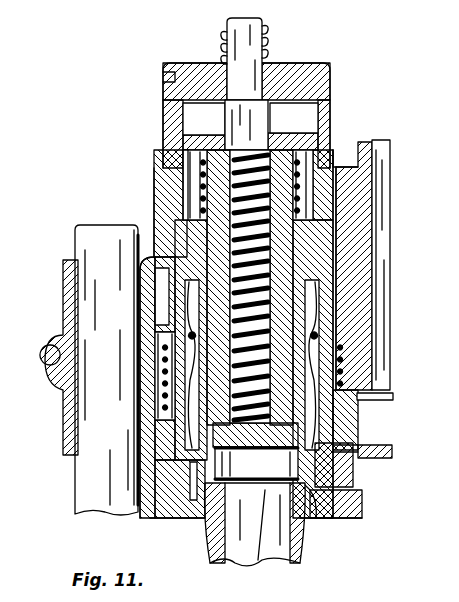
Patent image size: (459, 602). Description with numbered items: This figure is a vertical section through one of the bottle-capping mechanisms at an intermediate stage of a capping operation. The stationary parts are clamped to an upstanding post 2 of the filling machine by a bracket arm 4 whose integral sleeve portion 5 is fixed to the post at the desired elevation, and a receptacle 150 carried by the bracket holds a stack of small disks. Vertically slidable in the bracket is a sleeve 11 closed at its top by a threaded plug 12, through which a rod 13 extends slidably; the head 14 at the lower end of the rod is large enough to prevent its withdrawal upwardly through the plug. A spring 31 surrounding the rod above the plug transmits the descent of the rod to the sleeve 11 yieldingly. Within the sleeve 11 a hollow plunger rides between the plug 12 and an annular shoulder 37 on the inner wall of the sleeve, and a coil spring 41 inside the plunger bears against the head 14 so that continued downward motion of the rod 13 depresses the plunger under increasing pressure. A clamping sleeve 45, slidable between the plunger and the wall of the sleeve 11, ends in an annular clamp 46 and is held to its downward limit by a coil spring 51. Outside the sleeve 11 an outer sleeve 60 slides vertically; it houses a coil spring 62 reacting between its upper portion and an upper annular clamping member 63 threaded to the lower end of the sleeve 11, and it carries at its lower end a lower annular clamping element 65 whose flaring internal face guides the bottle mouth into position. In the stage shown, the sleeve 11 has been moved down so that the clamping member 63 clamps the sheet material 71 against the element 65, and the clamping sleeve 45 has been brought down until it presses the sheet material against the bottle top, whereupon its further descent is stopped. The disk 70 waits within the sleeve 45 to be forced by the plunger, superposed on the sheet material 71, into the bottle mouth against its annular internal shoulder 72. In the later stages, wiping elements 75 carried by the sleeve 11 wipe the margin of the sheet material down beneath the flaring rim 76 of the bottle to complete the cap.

The stationary post 2 is at (78, 234).
The bracket arm 4 is at (154, 196).
The sleeve portion 5 is at (66, 292).
The sleeve 11 is at (340, 135).
The threaded plug 12 is at (313, 85).
The rod 13 is at (228, 44).
The head 14 is at (222, 112).
The spring 31 is at (270, 32).
The annular shoulder 37 is at (186, 158).
The coil spring 41 is at (330, 120).
The sleeve 45 is at (352, 195).
The annular clamp 46 is at (360, 448).
The coil spring 51 is at (345, 155).
The sleeve 60 is at (158, 392).
The coil spring 62 is at (347, 376).
The upper annular clamping member 63 is at (355, 470).
The lower annular clamping element 65 is at (362, 510).
The disk 70 is at (270, 452).
The sheet material 71 is at (272, 495).
The annular internal shoulder 72 is at (262, 566).
The wiping elements 75 is at (316, 366).
The flaring rim 76 is at (312, 500).
The receptacle 150 is at (386, 245).